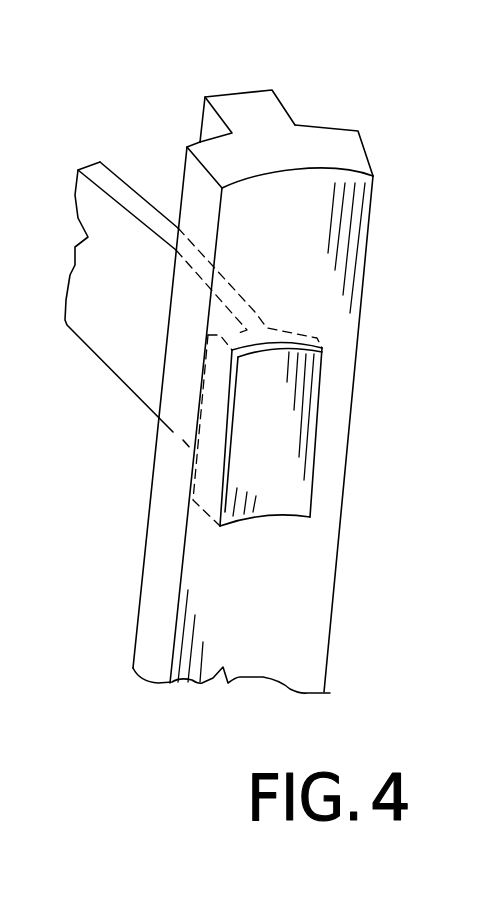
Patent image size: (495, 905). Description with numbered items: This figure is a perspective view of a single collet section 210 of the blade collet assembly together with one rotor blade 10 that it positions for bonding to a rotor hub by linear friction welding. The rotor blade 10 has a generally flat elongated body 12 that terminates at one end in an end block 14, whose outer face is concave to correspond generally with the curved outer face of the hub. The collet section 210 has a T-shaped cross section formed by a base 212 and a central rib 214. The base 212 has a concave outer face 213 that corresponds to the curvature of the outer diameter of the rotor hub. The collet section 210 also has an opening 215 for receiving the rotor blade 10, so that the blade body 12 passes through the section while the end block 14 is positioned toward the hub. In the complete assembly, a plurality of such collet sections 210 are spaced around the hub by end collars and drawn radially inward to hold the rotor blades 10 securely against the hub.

The rotor blade 10 is at (123, 188).
The elongated body 12 is at (120, 323).
The end block 14 is at (280, 443).
The collet section 210 is at (343, 421).
The base 212 is at (322, 154).
The concave outer face 213 is at (310, 223).
The central rib 214 is at (242, 118).
The opening 215 is at (228, 458).